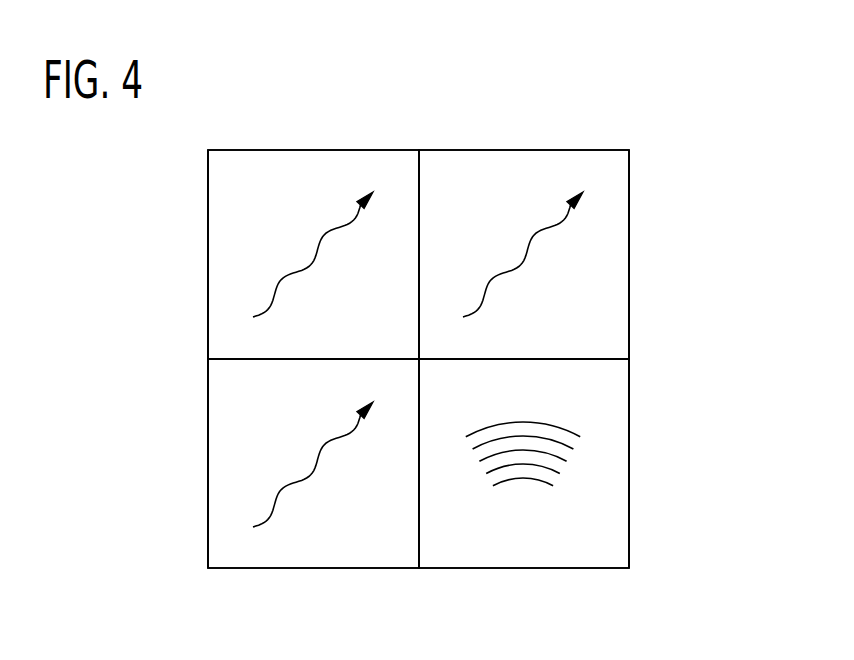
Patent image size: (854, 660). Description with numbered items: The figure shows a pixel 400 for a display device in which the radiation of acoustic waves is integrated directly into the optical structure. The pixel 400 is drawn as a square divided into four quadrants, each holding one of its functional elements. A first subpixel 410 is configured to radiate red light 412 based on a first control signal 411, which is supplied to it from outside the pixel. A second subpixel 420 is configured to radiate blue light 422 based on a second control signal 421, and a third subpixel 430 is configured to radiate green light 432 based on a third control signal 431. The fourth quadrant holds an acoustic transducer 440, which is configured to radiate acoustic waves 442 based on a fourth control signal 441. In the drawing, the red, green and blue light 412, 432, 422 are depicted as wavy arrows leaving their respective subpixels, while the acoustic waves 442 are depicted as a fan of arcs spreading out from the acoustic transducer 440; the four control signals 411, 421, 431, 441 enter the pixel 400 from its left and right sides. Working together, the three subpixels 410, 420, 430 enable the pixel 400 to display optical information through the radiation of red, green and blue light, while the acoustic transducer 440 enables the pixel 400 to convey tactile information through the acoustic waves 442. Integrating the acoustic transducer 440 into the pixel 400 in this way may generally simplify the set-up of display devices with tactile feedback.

The pixel 400 is at (86, 629).
The first subpixel 410 is at (271, 403).
The first control signal 411 is at (208, 465).
The red light 412 is at (313, 466).
The second subpixel 420 is at (482, 191).
The second control signal 421 is at (629, 255).
The blue light 422 is at (523, 256).
The third subpixel 430 is at (271, 191).
The third control signal 431 is at (208, 257).
The green light 432 is at (313, 256).
The acoustic transducer 440 is at (482, 403).
The fourth control signal 441 is at (629, 465).
The acoustic waves 442 is at (523, 480).